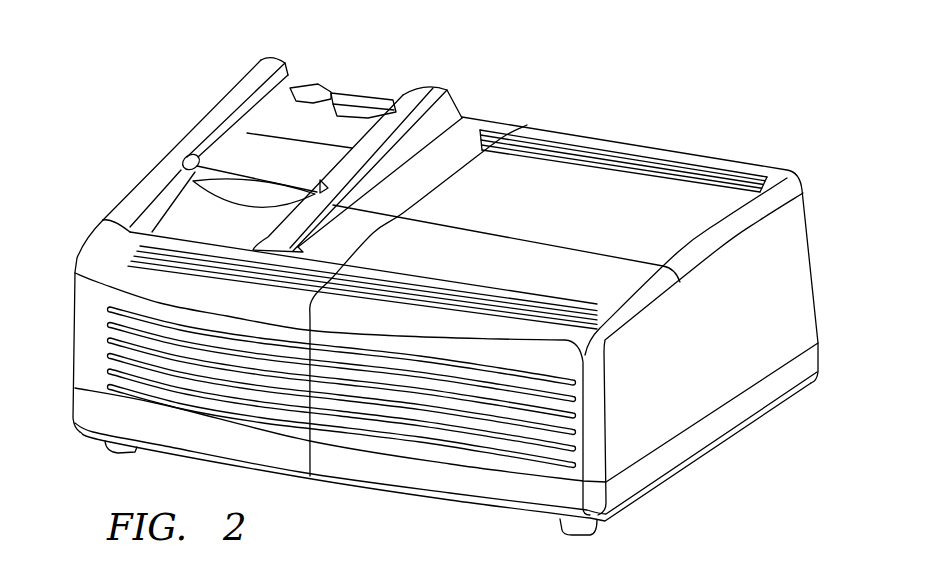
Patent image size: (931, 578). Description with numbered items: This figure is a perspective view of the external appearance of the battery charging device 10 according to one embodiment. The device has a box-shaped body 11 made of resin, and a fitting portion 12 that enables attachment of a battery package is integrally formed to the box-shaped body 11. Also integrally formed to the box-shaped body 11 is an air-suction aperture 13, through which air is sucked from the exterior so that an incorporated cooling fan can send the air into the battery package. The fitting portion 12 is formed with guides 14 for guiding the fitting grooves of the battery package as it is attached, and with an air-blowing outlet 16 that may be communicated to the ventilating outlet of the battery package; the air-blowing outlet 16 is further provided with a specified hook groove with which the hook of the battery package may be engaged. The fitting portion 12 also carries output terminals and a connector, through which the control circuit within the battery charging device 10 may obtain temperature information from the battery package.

The battery charging device 10 is at (611, 118).
The box-shaped body 11 is at (488, 122).
The fitting portion 12 is at (318, 123).
The air-suction aperture 13 is at (130, 350).
The guides 14 is at (245, 142).
The air-blowing outlet 16 is at (367, 112).